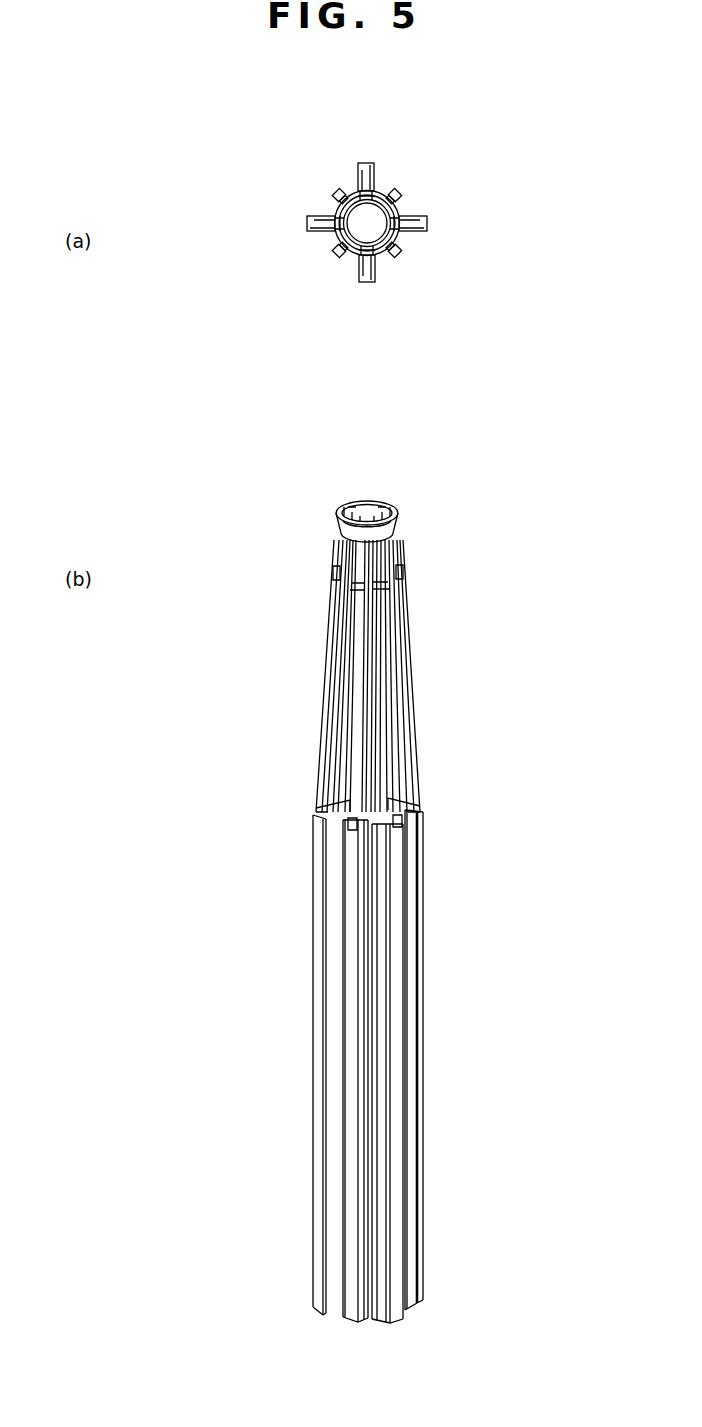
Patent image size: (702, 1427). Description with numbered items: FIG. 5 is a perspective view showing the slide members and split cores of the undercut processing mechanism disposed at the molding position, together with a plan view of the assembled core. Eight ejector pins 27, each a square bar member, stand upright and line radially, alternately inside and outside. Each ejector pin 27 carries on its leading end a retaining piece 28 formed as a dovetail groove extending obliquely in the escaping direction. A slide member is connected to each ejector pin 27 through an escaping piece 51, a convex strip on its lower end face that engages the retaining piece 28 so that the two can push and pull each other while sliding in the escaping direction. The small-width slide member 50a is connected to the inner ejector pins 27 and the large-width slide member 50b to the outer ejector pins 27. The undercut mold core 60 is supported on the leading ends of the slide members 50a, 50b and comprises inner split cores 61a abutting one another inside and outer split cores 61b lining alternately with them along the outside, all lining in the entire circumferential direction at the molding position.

The undercut mold core 60 is at (383, 503).
The inner split core 61a is at (366, 172).
The outer split core 61b is at (336, 196).
The slide member 50a is at (329, 623).
The slide member 50b is at (403, 592).
The escaping piece 51 is at (318, 810).
The retaining piece 28 is at (402, 812).
The ejector pin 27 is at (422, 885).